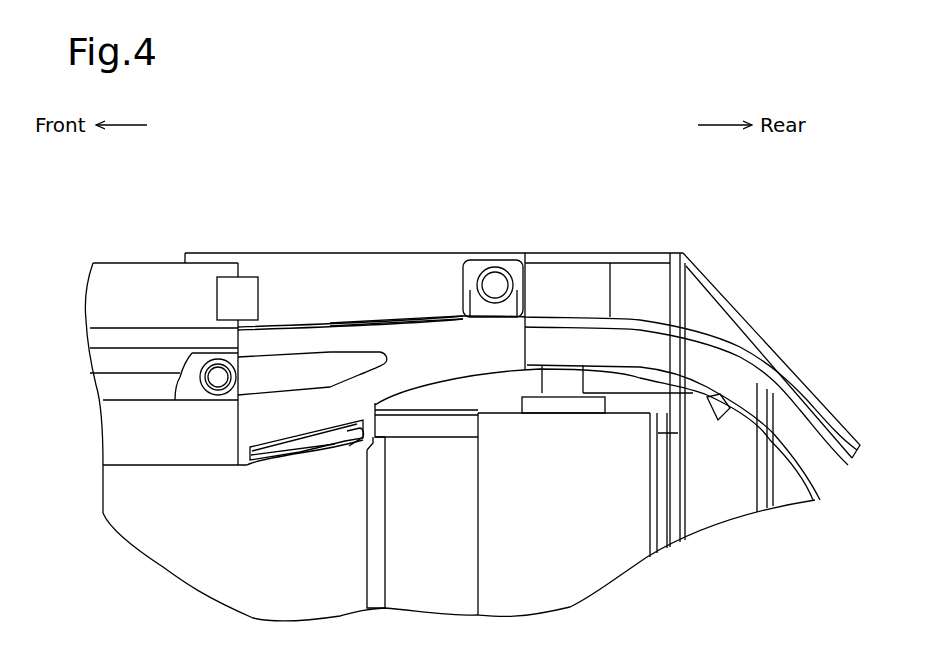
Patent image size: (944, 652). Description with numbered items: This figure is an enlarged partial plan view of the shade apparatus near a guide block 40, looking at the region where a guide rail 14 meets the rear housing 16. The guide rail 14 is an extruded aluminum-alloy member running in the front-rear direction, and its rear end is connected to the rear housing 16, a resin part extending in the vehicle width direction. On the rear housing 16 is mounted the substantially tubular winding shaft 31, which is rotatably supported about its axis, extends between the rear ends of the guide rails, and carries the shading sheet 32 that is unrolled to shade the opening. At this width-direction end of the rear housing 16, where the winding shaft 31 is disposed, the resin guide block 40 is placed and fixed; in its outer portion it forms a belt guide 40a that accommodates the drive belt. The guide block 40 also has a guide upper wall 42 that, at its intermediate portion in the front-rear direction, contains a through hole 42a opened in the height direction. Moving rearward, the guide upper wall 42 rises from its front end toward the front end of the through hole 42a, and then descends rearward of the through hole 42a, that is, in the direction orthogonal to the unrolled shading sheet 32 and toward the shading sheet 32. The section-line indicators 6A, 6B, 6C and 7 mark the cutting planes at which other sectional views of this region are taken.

The guide rail 14 is at (135, 263).
The rear housing 16 is at (644, 253).
The guide block 40 is at (299, 464).
The belt guide 40a is at (437, 325).
The guide upper wall 42 is at (382, 450).
The through hole 42a is at (357, 433).
The shading sheet 32 is at (495, 423).
The winding shaft 31 is at (593, 403).
The section line 7 is at (87, 433).
The section line 6A is at (243, 217).
The section line 6B is at (307, 197).
The section line 6C is at (367, 173).